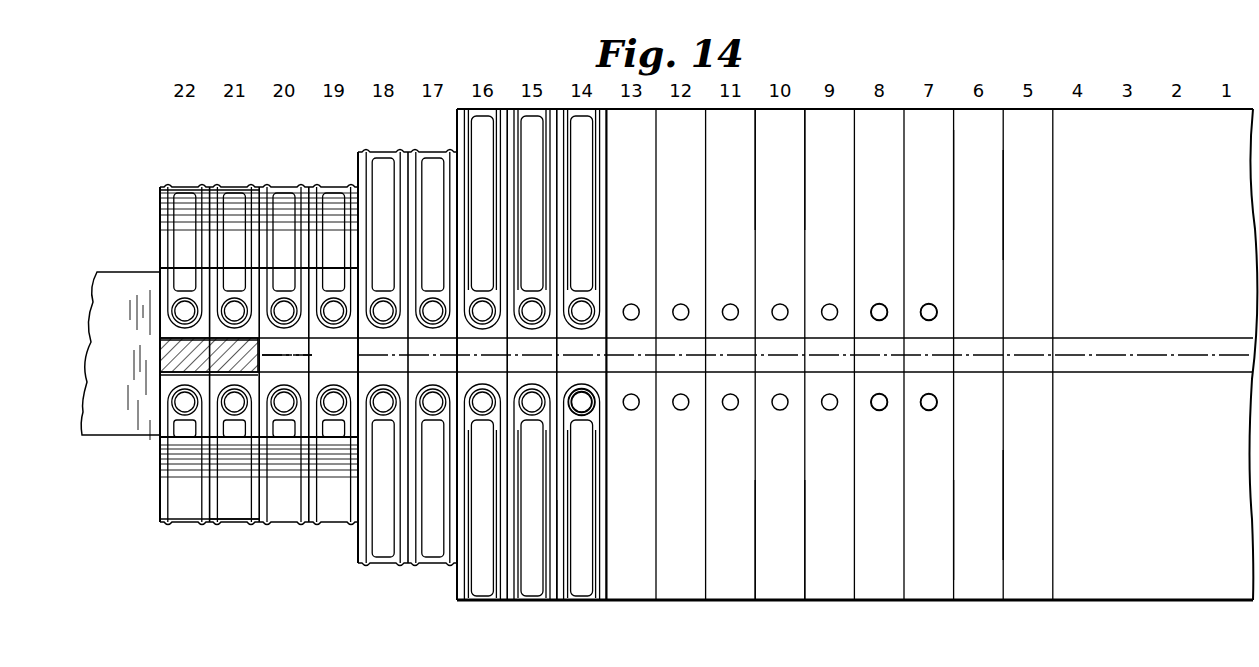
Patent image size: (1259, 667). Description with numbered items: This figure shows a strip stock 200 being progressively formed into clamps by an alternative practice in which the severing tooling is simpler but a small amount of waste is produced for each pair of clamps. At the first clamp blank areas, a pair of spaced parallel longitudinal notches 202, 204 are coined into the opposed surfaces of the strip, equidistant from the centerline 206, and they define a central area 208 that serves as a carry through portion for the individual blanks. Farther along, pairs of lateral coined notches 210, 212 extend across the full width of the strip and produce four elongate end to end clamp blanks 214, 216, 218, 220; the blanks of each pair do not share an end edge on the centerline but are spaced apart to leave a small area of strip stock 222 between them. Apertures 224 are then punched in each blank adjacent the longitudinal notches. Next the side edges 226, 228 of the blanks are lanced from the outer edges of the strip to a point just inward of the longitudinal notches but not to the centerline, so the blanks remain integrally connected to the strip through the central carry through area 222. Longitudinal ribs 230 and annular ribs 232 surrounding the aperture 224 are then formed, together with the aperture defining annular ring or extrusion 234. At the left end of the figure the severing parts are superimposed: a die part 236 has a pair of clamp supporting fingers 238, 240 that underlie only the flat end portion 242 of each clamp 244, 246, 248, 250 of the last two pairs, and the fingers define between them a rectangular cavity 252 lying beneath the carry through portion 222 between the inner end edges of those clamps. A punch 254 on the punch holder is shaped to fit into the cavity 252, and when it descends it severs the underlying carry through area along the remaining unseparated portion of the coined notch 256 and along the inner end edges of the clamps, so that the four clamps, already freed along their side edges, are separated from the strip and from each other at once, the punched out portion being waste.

The strip stock 200 is at (1190, 553).
The coined notch 202 is at (1221, 375).
The coined notch 204 is at (1228, 336).
The centerline 206 is at (1176, 355).
The central area 208 is at (1190, 373).
The coined notch 210 is at (1003, 475).
The coined notch 212 is at (1003, 303).
The clamp blank 214 is at (1008, 517).
The clamp blank 216 is at (1009, 224).
The clamp blank 218 is at (959, 542).
The clamp blank 220 is at (963, 192).
The area of strip stock 222 is at (1020, 345).
The aperture 224 is at (921, 306).
The side edge 226 is at (803, 506).
The side edge 228 is at (803, 239).
The longitudinal rib 230 is at (561, 603).
The annular rib 232 is at (593, 412).
The annular ring or extrusion 234 is at (596, 391).
The die part 236 is at (112, 282).
The clamp supporting finger 238 is at (187, 282).
The clamp supporting finger 240 is at (158, 448).
The flat end portion 242 is at (165, 377).
The clamp 244 is at (183, 524).
The clamp 246 is at (185, 184).
The clamp 248 is at (232, 524).
The clamp 250 is at (233, 184).
The rectangular cavity 252 is at (175, 341).
The punch 254 is at (162, 350).
The coined notch 256 is at (310, 349).